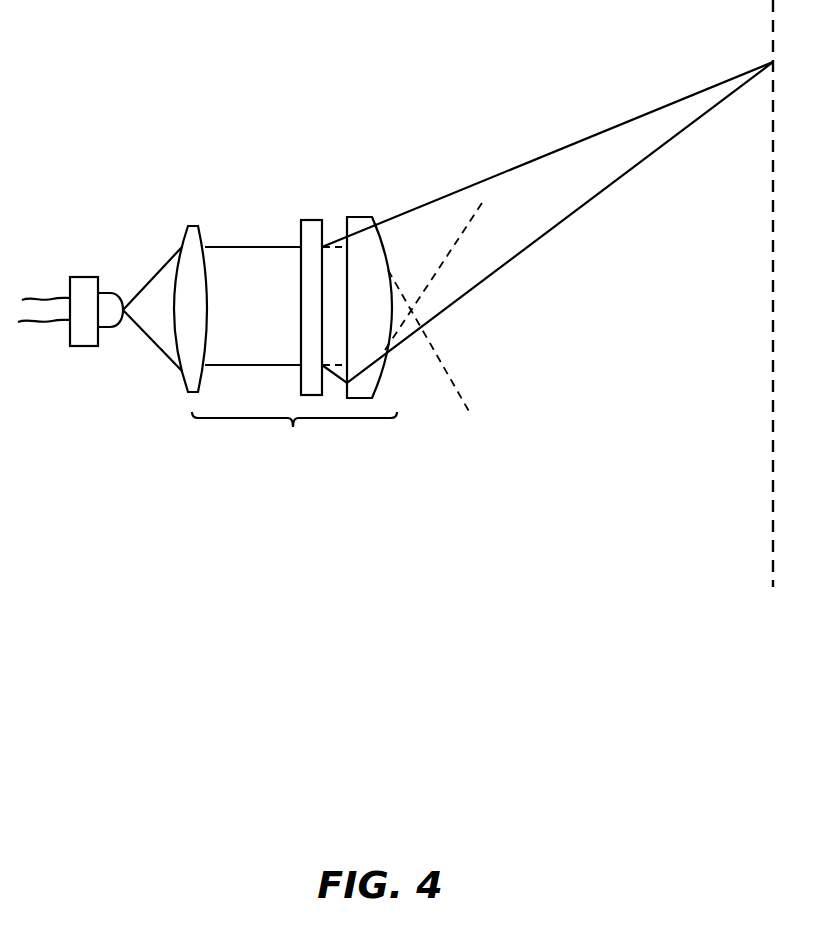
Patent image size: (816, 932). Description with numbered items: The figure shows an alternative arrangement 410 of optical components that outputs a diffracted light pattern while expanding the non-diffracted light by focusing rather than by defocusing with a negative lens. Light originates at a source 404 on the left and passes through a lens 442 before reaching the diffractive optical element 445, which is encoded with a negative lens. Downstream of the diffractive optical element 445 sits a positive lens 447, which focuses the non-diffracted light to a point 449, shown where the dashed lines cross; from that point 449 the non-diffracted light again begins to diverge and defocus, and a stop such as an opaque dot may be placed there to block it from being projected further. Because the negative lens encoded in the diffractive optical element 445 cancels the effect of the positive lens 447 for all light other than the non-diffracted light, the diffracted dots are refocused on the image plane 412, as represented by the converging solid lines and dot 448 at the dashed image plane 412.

The light source (LED) 404 is at (92, 333).
The collimating lens 442 is at (192, 245).
The diffractive optical element 445 is at (309, 230).
The positive lens 447 is at (359, 230).
The converging solid lines/dot 448 is at (770, 60).
The point 449 is at (413, 315).
The image plane 412 is at (772, 518).
The arrangement 410 is at (294, 437).